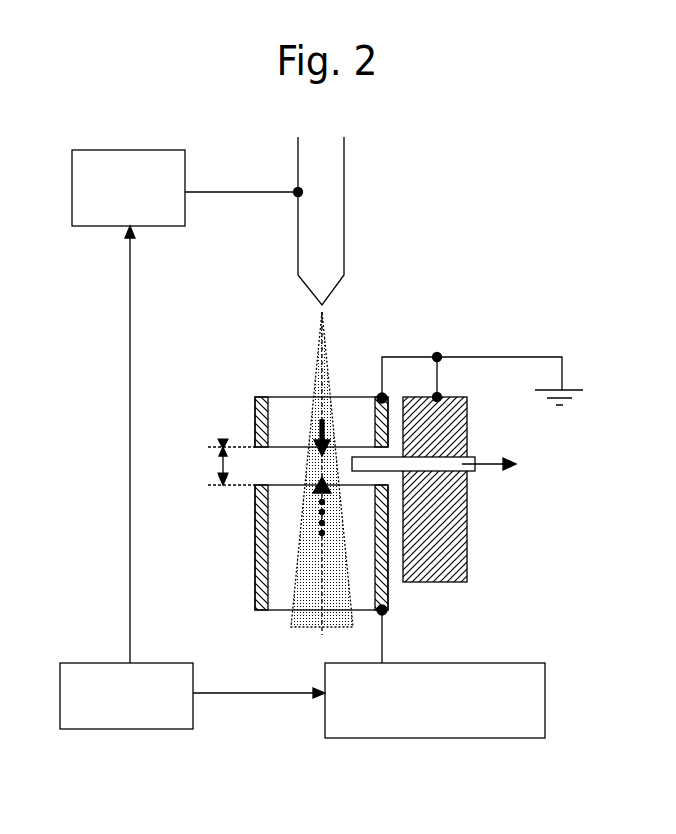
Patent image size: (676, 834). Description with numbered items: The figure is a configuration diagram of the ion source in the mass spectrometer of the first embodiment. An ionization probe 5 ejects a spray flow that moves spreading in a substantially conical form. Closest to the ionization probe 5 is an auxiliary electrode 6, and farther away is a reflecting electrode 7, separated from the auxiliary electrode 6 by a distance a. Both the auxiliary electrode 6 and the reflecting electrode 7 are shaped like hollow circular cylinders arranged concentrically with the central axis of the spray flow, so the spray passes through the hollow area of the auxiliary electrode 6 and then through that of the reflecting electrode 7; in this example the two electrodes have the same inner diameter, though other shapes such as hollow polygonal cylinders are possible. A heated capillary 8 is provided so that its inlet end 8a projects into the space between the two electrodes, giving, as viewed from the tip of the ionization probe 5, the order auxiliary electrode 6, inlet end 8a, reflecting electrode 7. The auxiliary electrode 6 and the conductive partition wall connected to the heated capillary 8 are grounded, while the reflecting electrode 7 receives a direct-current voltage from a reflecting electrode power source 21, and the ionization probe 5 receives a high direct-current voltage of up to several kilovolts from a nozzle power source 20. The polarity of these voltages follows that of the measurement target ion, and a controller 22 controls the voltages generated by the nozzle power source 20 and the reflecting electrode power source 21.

The ionization probe 5 is at (347, 228).
The auxiliary electrode 6 is at (255, 411).
The reflecting electrode 7 is at (255, 533).
The heated capillary 8 is at (390, 473).
The inlet end 8a is at (352, 468).
The nozzle power source 20 is at (140, 150).
The reflecting electrode power source 21 is at (545, 682).
The controller 22 is at (60, 683).
The distance a is at (228, 466).